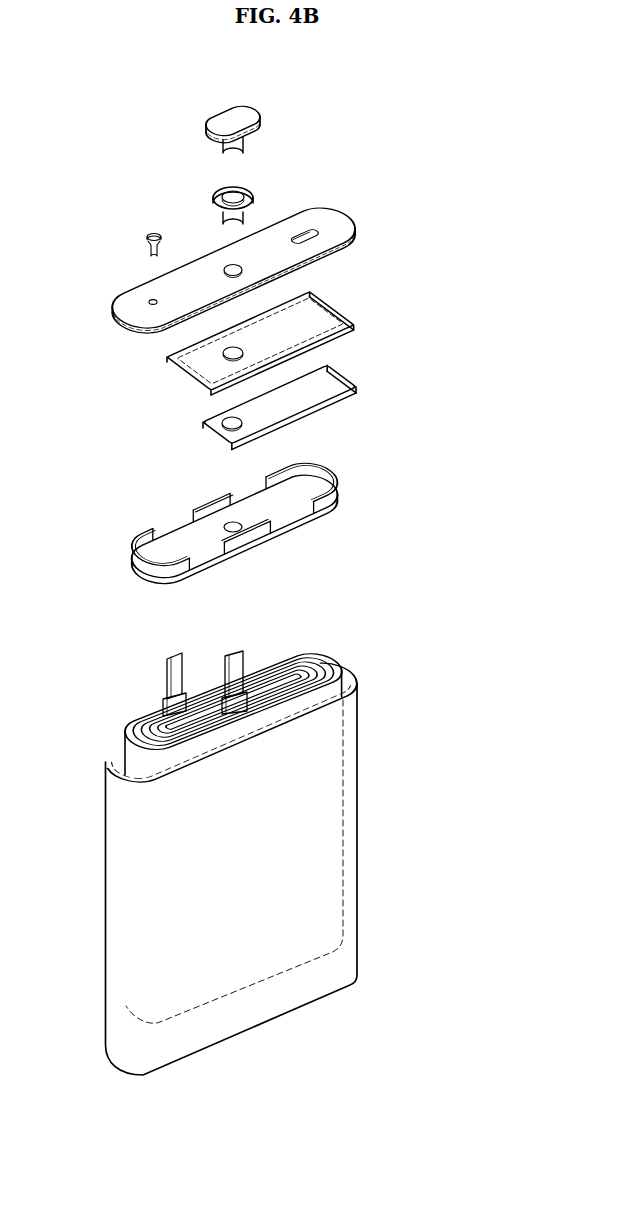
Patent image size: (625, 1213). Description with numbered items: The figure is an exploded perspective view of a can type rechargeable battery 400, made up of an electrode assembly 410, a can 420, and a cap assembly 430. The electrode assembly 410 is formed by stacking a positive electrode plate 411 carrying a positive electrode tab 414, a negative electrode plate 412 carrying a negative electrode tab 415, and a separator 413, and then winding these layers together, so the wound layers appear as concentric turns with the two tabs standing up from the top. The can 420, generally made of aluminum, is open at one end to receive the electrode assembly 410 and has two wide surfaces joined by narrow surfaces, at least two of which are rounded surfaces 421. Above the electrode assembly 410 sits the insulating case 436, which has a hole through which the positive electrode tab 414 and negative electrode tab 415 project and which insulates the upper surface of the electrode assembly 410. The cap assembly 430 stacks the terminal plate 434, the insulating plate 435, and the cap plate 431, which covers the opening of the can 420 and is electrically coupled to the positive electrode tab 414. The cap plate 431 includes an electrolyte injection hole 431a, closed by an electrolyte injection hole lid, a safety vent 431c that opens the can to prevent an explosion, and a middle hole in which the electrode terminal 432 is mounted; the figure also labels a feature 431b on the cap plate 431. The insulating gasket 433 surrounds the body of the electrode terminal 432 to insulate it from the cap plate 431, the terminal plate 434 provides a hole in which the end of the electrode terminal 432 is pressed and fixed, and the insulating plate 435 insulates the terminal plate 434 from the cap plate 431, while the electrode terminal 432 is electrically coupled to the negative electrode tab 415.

The can type rechargeable battery 400 is at (279, 572).
The electrode assembly 410 is at (397, 640).
The positive electrode plate 411 is at (335, 662).
The negative electrode plate 412 is at (313, 657).
The separator 413 is at (323, 660).
The positive electrode tab 414 is at (182, 668).
The negative electrode tab 415 is at (240, 668).
The can 420 is at (357, 785).
The rounded surface 421 is at (360, 677).
The cap assembly 430 is at (460, 133).
The cap plate 431 is at (330, 228).
The electrolyte injection hole 431a is at (151, 300).
The plug 431b is at (152, 235).
The safety vent 431c is at (320, 236).
The electrode terminal 432 is at (260, 106).
The insulating gasket 433 is at (250, 188).
The terminal plate 434 is at (327, 368).
The insulating plate 435 is at (320, 297).
The insulating case 436 is at (320, 473).